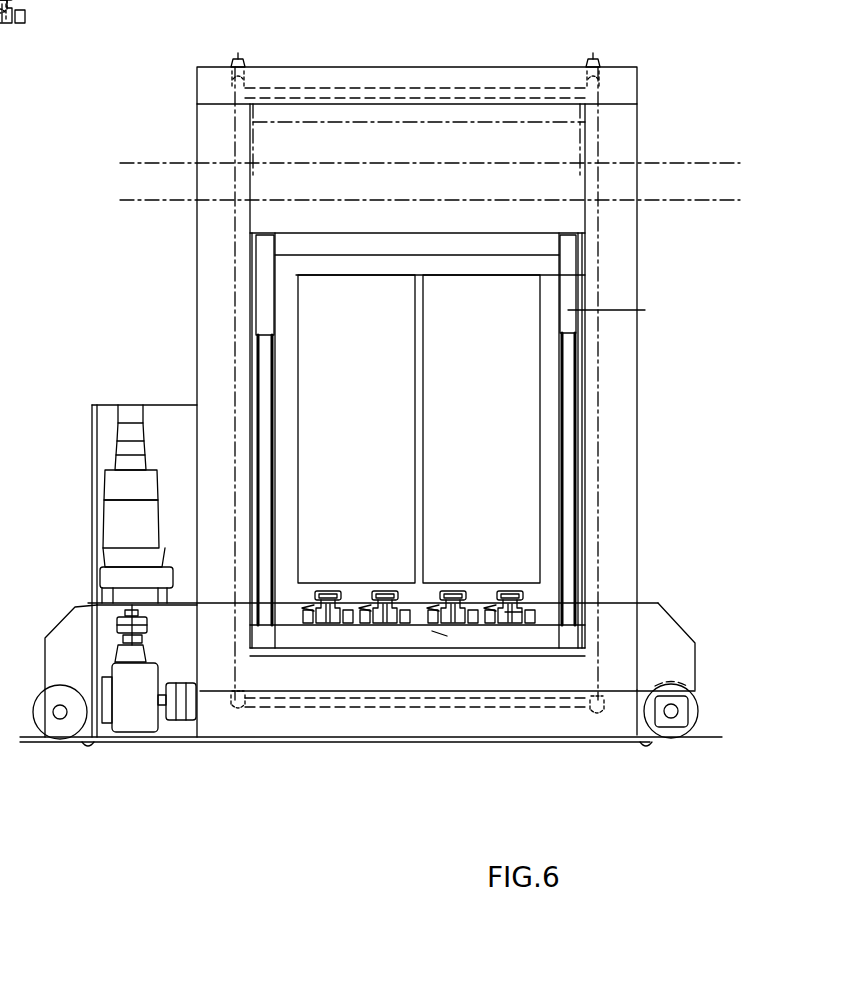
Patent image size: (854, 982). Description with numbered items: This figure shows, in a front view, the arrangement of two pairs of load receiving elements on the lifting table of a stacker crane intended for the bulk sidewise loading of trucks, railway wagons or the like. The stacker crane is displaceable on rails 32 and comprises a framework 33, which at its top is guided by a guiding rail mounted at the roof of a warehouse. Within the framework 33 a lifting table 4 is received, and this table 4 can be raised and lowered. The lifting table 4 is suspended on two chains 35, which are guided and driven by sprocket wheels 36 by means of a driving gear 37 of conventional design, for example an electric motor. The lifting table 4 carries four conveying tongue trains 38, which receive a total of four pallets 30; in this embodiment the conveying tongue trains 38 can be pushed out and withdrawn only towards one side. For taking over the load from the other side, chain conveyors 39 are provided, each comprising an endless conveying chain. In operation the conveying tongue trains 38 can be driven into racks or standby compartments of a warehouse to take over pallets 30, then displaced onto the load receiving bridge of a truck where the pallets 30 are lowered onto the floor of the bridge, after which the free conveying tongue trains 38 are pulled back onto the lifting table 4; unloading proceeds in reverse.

The lifting table 4 is at (328, 635).
The pallets 30 is at (358, 593).
The rails 32 is at (371, 766).
The framework 33 is at (625, 385).
The chains 35 is at (600, 230).
The sprocket wheels 36 is at (245, 78).
The driving gear 37 is at (110, 537).
The conveying tongue trains 38 is at (513, 607).
The chain conveyors 39 is at (445, 625).